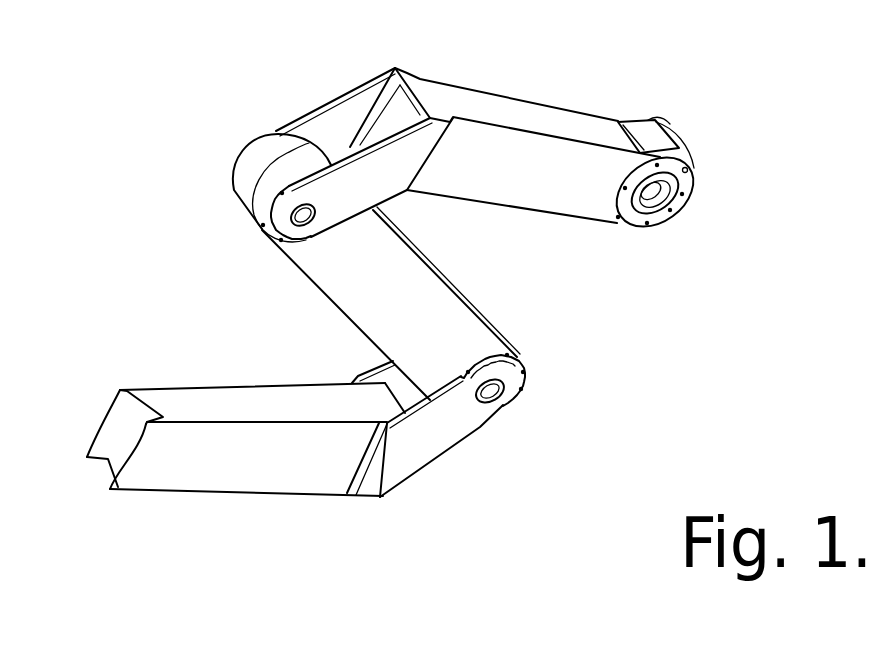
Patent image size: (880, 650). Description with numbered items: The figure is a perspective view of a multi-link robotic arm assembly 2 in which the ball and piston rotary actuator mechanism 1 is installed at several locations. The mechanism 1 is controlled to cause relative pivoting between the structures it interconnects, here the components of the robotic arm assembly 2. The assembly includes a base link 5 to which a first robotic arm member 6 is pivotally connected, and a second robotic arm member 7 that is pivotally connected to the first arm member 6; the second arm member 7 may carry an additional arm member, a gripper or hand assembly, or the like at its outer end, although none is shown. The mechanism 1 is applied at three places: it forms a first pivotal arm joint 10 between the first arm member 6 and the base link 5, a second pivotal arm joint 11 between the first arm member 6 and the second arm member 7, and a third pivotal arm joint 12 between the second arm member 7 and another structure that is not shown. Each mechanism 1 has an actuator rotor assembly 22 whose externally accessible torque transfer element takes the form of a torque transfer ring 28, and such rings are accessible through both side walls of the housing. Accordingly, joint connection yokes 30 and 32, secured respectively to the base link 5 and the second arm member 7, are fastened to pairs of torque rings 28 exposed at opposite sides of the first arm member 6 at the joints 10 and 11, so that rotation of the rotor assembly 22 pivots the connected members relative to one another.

The ball and piston rotary actuator mechanism 1 is at (684, 131).
The robotic arm assembly 2 is at (90, 310).
The base link 5 is at (223, 477).
The first robotic arm member 6 is at (357, 296).
The second robotic arm member 7 is at (518, 103).
The first pivotal arm joint 10 is at (514, 398).
The second pivotal arm joint 11 is at (314, 232).
The third pivotal arm joint 12 is at (697, 176).
The actuator rotor assembly 22 is at (679, 223).
The torque transfer ring 28 is at (622, 222).
The joint connection yoke 30 is at (384, 190).
The joint connection yoke 32 is at (334, 96).